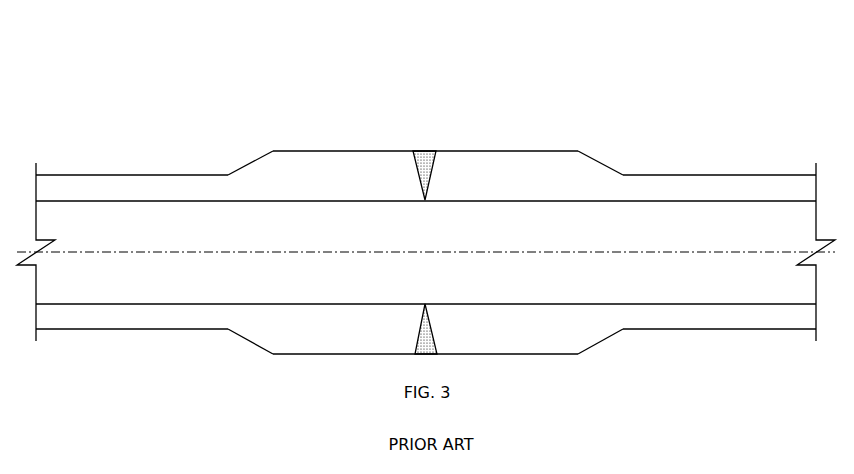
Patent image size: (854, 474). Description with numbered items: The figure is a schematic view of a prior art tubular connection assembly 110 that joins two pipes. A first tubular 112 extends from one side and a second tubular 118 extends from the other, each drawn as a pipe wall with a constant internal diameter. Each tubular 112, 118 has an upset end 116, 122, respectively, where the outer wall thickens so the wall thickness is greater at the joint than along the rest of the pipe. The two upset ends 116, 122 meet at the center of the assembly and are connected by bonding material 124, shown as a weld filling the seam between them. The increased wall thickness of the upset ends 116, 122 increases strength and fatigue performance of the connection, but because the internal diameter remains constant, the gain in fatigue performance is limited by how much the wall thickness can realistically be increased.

The tubular connection assembly 110 is at (223, 103).
The first tubular 112 is at (113, 172).
The upset end 116 is at (333, 149).
The upset end 122 is at (520, 149).
The bonding material 124 is at (425, 149).
The second tubular 118 is at (735, 172).